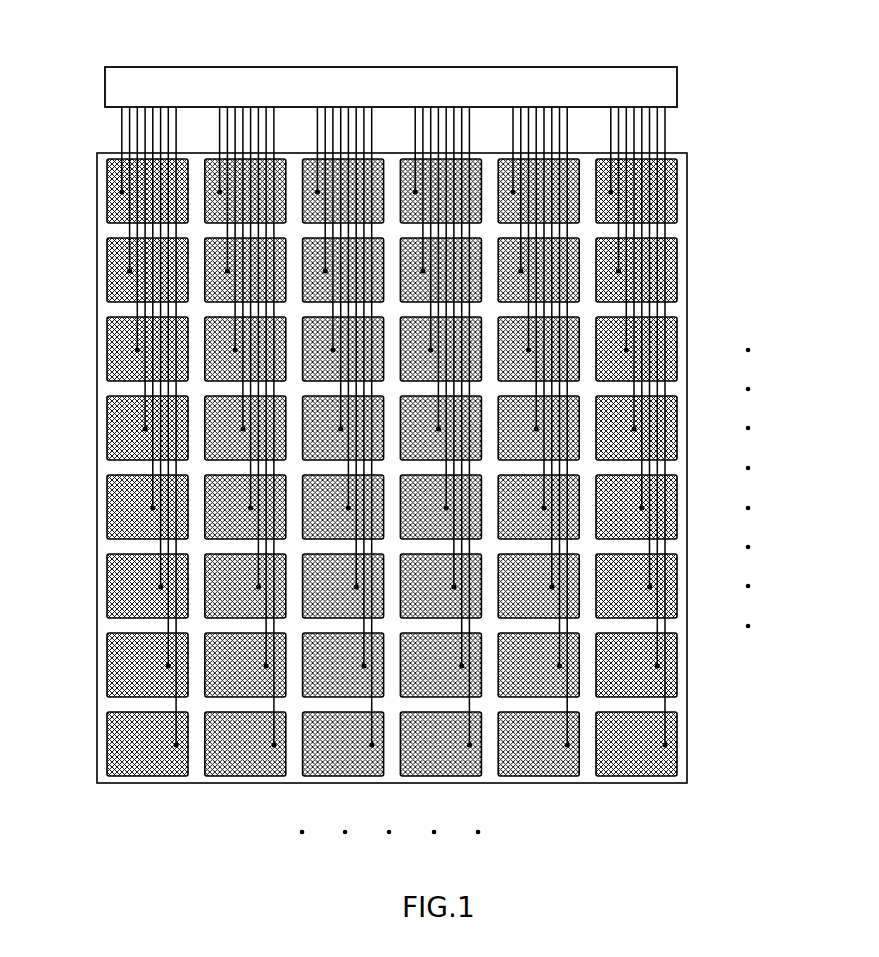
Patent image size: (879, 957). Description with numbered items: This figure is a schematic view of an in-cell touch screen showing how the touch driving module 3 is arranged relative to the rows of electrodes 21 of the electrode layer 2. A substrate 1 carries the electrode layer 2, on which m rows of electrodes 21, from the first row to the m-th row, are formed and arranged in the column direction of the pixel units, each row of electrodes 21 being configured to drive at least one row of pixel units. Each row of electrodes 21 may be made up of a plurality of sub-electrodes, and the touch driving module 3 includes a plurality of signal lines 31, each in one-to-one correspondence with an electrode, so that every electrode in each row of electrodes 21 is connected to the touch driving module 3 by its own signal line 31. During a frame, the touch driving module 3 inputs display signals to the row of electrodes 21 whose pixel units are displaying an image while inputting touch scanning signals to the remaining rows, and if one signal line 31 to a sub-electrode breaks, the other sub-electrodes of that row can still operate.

The substrate 1 is at (97, 465).
The electrode layer 2 is at (109, 353).
The rows of electrodes 21 is at (115, 257).
The touch driving module 3 is at (672, 86).
The signal lines 31 is at (667, 128).